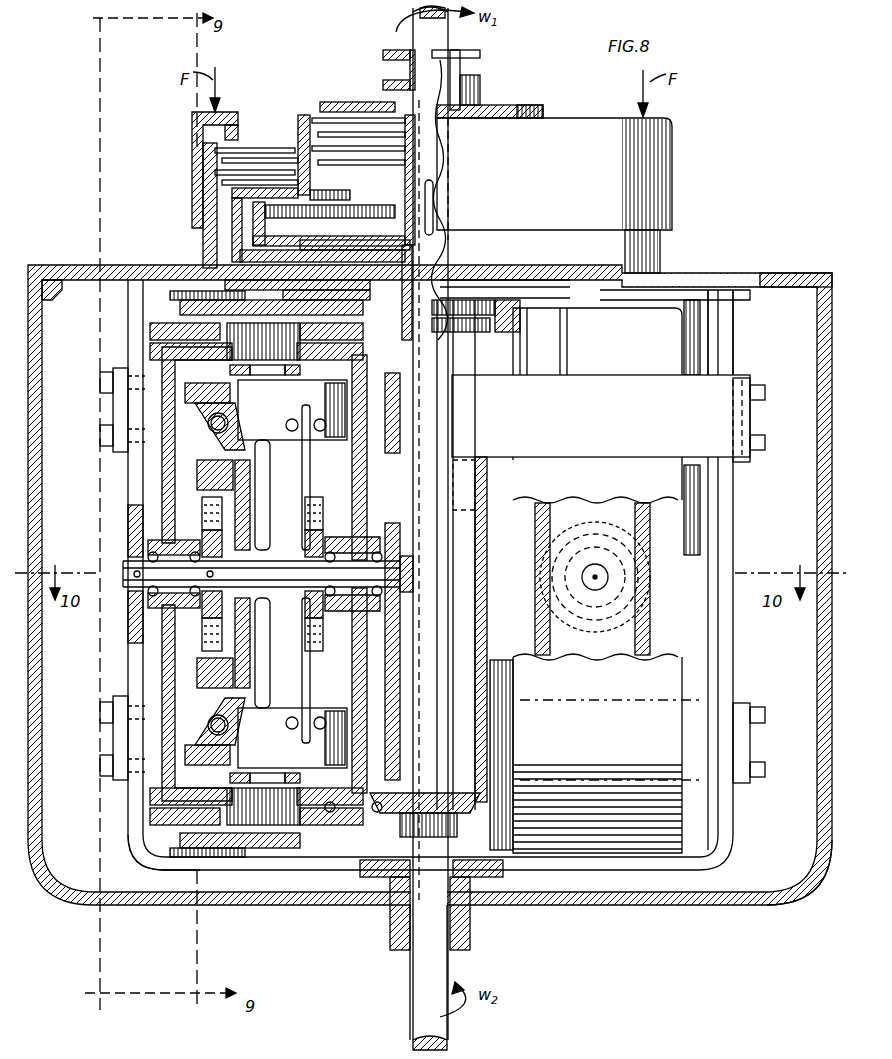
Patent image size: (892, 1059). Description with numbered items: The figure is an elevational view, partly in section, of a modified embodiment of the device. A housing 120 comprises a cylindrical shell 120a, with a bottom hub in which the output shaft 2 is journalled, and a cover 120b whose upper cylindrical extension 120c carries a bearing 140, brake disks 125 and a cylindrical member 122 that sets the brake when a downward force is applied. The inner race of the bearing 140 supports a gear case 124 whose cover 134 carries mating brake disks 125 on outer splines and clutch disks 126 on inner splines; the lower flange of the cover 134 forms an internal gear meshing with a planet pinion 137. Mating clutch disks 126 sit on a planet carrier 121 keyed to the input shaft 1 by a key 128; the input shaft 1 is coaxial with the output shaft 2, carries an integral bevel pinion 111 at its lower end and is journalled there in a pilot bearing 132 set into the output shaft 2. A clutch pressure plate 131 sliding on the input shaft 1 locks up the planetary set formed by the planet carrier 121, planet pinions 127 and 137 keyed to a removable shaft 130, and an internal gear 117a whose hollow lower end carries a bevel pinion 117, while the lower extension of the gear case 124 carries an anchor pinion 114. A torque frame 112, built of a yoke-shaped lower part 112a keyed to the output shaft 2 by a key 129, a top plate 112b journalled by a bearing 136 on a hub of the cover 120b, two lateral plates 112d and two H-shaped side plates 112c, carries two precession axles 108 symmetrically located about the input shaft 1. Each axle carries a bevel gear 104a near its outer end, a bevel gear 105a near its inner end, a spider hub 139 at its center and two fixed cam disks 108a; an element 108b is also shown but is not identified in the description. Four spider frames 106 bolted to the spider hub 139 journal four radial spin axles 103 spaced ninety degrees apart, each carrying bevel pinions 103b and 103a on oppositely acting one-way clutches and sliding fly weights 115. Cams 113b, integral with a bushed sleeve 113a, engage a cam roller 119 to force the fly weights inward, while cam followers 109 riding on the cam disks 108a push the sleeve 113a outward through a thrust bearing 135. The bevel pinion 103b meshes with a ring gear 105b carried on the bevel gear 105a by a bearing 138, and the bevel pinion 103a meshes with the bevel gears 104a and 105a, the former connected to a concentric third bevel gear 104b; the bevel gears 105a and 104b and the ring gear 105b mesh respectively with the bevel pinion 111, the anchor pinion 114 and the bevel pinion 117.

The input shaft 1 is at (455, 40).
The output shaft 2 is at (452, 1027).
The spin axles 103 is at (165, 457).
The bevel pinion 103a is at (165, 372).
The bevel pinion 103b is at (200, 282).
The bevel gear 104a is at (170, 402).
The third bevel gear 104b is at (110, 266).
The bevel gear 105a is at (472, 702).
The ring gear 105b is at (250, 268).
The spider frames 106 is at (300, 372).
The precession axles 108 is at (268, 574).
The cam disks 108a is at (160, 613).
The upper bearing 108b is at (128, 562).
The cam followers 109 is at (205, 510).
The bevel pinion 111 is at (445, 834).
The torque-frame 112 is at (120, 853).
The yoke shaped lower part 112a is at (155, 877).
The top plate 112b is at (716, 300).
The side plates 112c is at (392, 446).
The lateral plates 112d is at (750, 405).
The bushed sleeve 113a is at (200, 684).
The cams 113b is at (200, 432).
The anchor pinion 114 is at (540, 300).
The fly weights 115 is at (309, 574).
The bevel pinion 117 is at (482, 364).
The internal gear 117a is at (441, 248).
The cam roller 119 is at (230, 420).
The housing 120 is at (616, 914).
The cylindrical shell 120a is at (748, 907).
The cover 120b is at (793, 273).
The upper cylindrical extension 120c is at (660, 258).
The planet carrier 121 is at (450, 166).
The cylindrical member 122 is at (677, 130).
The gear case 124 is at (441, 270).
The brake disks 125 is at (273, 160).
The clutch disks 126 is at (358, 125).
The planet pinion 127 is at (402, 213).
The key 128 is at (463, 193).
The key 129 is at (380, 892).
The removable shaft 130 is at (335, 232).
The clutch pressure plate 131 is at (478, 85).
The pilot bearing 132 is at (338, 815).
The gear case cover 134 is at (303, 113).
The thrust bearing 135 is at (195, 485).
The bearing 136 is at (483, 287).
The planet pinion 137 is at (350, 198).
The bearing 138 is at (315, 872).
The spider hub 139 is at (215, 545).
The bearing 140 is at (215, 210).